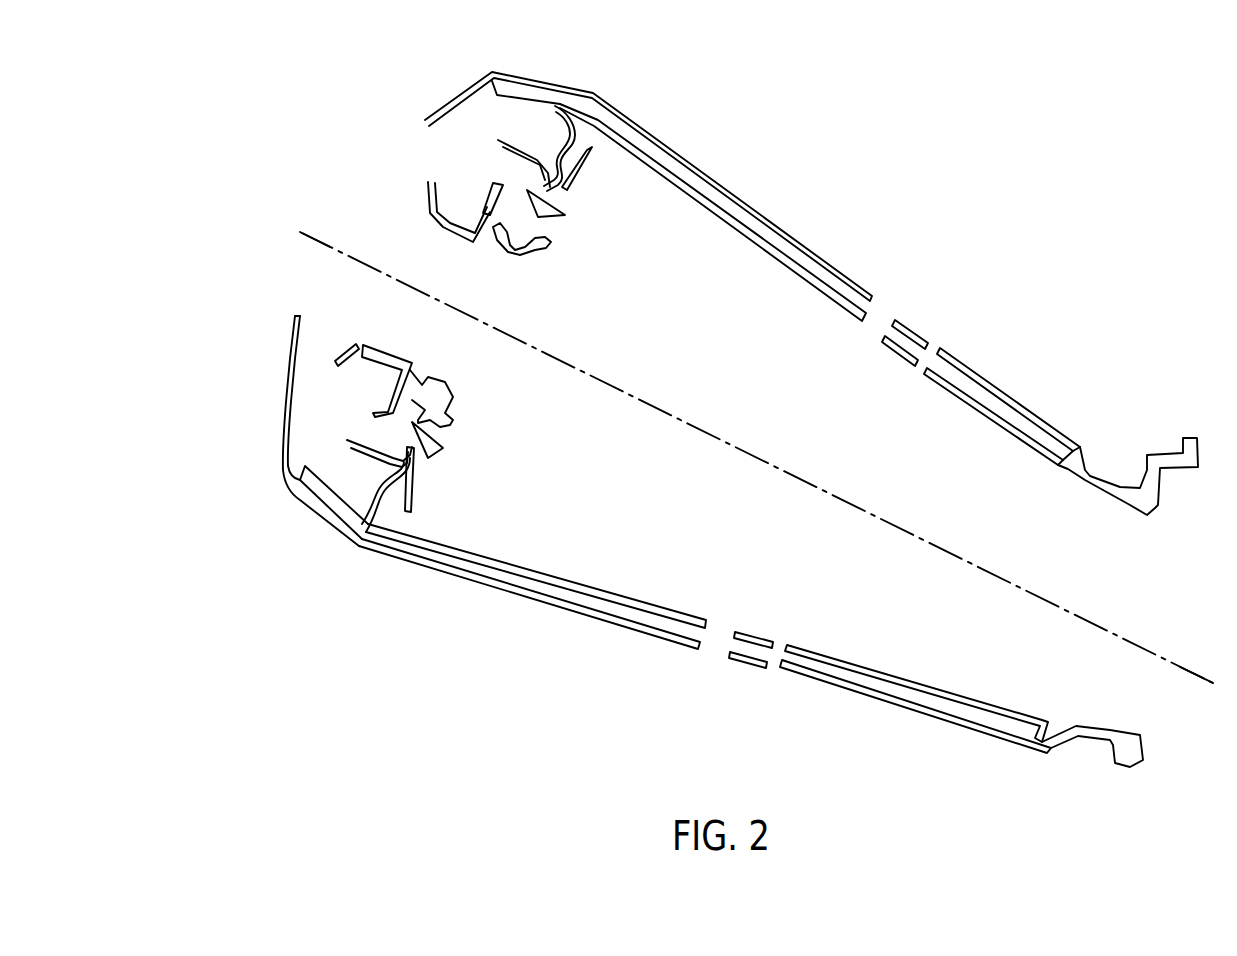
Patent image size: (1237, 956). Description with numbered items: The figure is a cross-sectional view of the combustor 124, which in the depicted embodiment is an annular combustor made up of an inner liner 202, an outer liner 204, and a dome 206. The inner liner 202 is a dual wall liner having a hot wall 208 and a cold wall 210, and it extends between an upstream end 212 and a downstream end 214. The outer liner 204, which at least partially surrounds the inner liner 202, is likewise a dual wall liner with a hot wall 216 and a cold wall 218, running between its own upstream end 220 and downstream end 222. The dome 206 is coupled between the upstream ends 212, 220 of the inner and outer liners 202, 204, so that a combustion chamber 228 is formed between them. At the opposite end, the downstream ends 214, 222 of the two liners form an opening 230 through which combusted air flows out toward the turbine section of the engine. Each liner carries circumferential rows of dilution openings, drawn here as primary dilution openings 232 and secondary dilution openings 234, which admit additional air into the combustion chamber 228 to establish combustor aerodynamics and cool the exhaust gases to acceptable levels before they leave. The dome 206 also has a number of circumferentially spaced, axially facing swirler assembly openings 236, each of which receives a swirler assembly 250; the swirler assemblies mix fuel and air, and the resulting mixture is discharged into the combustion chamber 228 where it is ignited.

The combustor 124 is at (268, 506).
The inner liner 202 is at (713, 541).
The outer liner 204 is at (648, 182).
The dome 206 is at (372, 368).
The hot wall 208 is at (648, 603).
The cold wall 210 is at (611, 620).
The upstream end 212 is at (352, 532).
The downstream end 214 is at (1023, 722).
The hot wall 216 is at (742, 242).
The cold wall 218 is at (777, 229).
The upstream end 220 is at (556, 90).
The downstream end 222 is at (1050, 437).
The combustion chamber 228 is at (700, 390).
The opening 230 is at (1123, 577).
The primary dilution openings 232 is at (882, 314).
The secondary dilution openings 234 is at (939, 351).
The swirler assembly openings 236 is at (378, 224).
The swirler assembly 250 is at (520, 247).